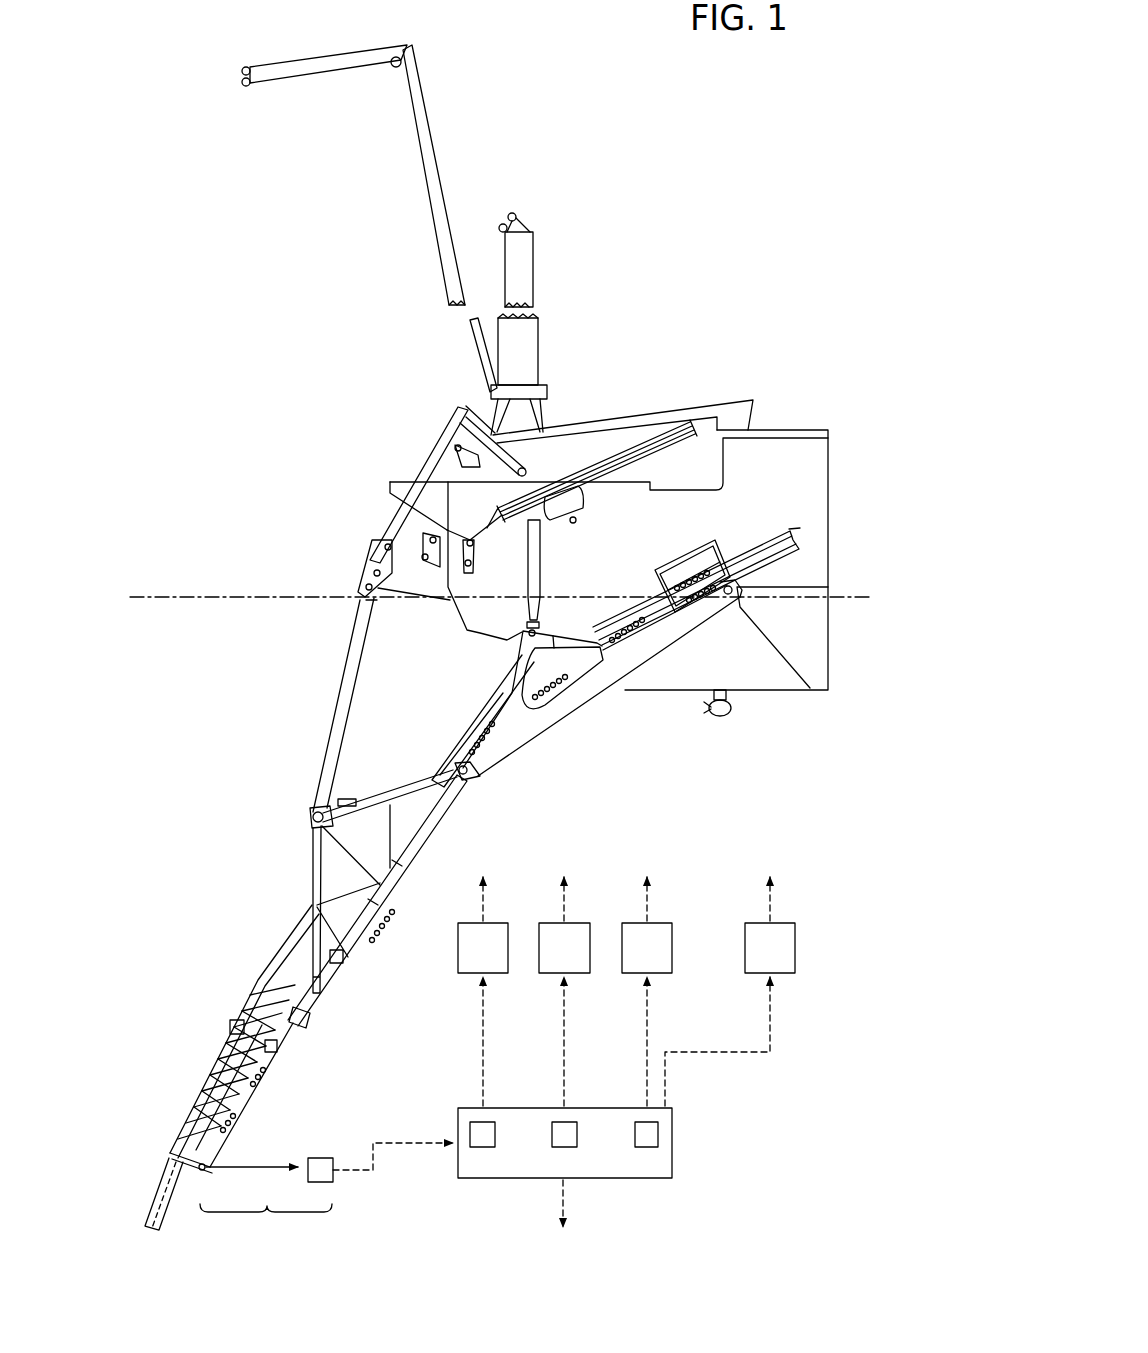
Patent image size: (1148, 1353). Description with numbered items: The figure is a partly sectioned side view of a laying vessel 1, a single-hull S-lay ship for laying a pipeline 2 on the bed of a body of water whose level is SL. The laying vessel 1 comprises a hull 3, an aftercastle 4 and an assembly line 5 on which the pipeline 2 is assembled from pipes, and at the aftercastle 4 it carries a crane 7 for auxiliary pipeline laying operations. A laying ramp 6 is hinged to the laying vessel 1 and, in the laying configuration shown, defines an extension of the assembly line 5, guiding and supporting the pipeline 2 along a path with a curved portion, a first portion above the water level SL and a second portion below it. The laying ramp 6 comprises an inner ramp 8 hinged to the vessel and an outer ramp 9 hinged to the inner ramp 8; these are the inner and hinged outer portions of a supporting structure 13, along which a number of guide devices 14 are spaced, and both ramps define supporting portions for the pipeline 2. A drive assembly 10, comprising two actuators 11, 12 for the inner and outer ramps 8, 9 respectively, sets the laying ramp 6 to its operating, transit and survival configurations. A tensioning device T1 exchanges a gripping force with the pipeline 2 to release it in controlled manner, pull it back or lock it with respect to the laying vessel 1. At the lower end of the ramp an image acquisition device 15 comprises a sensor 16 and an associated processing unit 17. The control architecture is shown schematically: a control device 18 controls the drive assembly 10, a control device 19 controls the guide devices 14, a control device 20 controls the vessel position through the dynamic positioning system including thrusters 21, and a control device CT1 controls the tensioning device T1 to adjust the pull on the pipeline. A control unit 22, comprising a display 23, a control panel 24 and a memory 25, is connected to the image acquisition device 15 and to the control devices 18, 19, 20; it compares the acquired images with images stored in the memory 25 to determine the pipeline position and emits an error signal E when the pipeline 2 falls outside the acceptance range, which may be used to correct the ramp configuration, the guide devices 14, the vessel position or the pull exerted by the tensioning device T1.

The laying vessel 1 is at (228, 258).
The pipeline 2 is at (162, 1195).
The hull 3 is at (812, 660).
The aftercastle 4 is at (415, 385).
The assembly line 5 is at (842, 503).
The laying ramp 6 is at (530, 830).
The crane 7 is at (546, 275).
The inner ramp 8 is at (534, 748).
The outer ramp 9 is at (350, 985).
The drive assembly 10 is at (338, 432).
The actuator 11 is at (568, 522).
The actuator 12 is at (386, 609).
The supporting structure 13 is at (478, 765).
The guide devices 14 is at (637, 648).
The image acquisition device 15 is at (265, 1222).
The sensor 16 is at (199, 1175).
The processing unit 17 is at (326, 1174).
The control device 18 is at (498, 965).
The control device 19 is at (580, 963).
The control device 20 is at (658, 957).
The thruster 21 is at (731, 706).
The control unit 22 is at (658, 1185).
The display 23 is at (653, 1137).
The control panel 24 is at (568, 1132).
The memory 25 is at (487, 1133).
The water level SL is at (192, 592).
The tensioning device T1 is at (707, 612).
The control device CT1 is at (783, 955).
The error signal E is at (576, 1203).